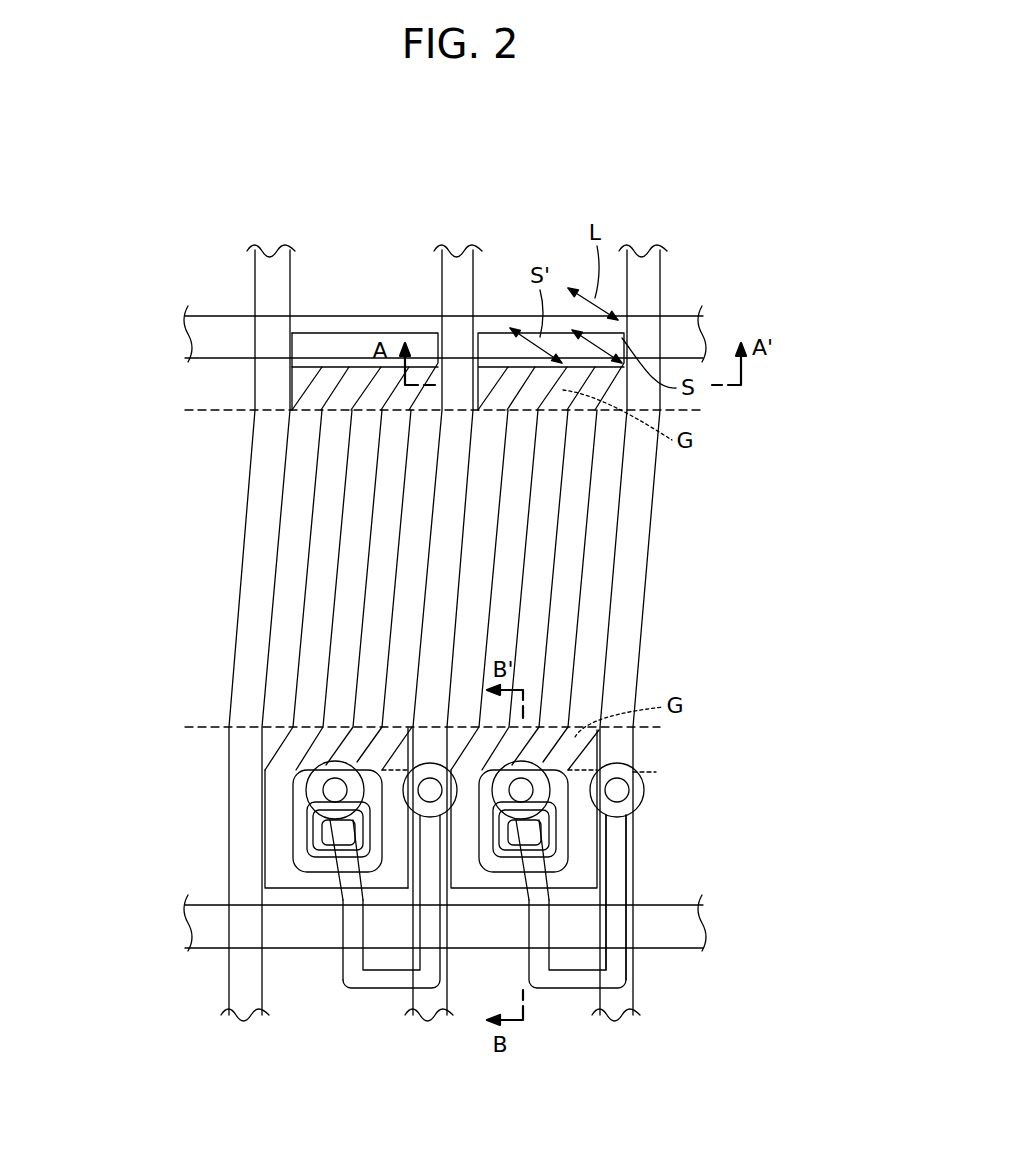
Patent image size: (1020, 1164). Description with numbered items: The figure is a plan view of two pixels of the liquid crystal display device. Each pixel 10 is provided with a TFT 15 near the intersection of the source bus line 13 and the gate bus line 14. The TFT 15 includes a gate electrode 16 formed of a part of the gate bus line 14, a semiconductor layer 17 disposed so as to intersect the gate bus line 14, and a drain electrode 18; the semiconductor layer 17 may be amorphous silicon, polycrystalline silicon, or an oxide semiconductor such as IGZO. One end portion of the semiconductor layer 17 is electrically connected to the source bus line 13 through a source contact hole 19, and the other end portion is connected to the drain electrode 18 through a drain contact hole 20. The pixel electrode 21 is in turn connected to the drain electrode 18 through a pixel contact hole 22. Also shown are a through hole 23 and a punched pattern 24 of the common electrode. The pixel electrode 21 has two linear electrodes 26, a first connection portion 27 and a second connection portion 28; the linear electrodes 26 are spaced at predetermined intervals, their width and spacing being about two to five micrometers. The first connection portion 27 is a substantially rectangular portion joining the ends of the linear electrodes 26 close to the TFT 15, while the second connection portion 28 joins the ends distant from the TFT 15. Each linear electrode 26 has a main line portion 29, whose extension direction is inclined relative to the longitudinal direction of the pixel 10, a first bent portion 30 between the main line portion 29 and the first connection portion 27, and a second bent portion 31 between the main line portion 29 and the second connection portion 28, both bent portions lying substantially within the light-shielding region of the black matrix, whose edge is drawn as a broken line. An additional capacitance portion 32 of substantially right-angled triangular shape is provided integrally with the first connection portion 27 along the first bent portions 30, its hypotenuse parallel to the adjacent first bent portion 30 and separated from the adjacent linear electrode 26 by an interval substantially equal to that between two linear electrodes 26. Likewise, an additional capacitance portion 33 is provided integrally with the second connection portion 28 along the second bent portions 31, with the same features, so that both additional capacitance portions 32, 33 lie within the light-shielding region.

The pixel 10 is at (360, 233).
The source bus line 13 is at (272, 250).
The gate bus line 14 is at (185, 338).
The TFT 15 is at (382, 1035).
The gate electrode 16 is at (352, 930).
The semiconductor layer 17 is at (373, 980).
The drain electrode 18 is at (300, 778).
The source contact hole 19 is at (620, 790).
The drain contact hole 20 is at (326, 790).
The pixel electrode 21 is at (326, 320).
The pixel contact hole 22 is at (325, 832).
The through hole 23 is at (315, 842).
The punched pattern of the common electrode 24 is at (300, 858).
The linear electrode 26 is at (163, 510).
The first connection portion 27 is at (385, 882).
The second connection portion 28 is at (357, 343).
The main line portion 29 is at (318, 568).
The first bent portion 30 is at (290, 760).
The second bent portion 31 is at (343, 393).
The additional capacitance portion 32 is at (400, 748).
The additional capacitance portion 33 is at (290, 383).